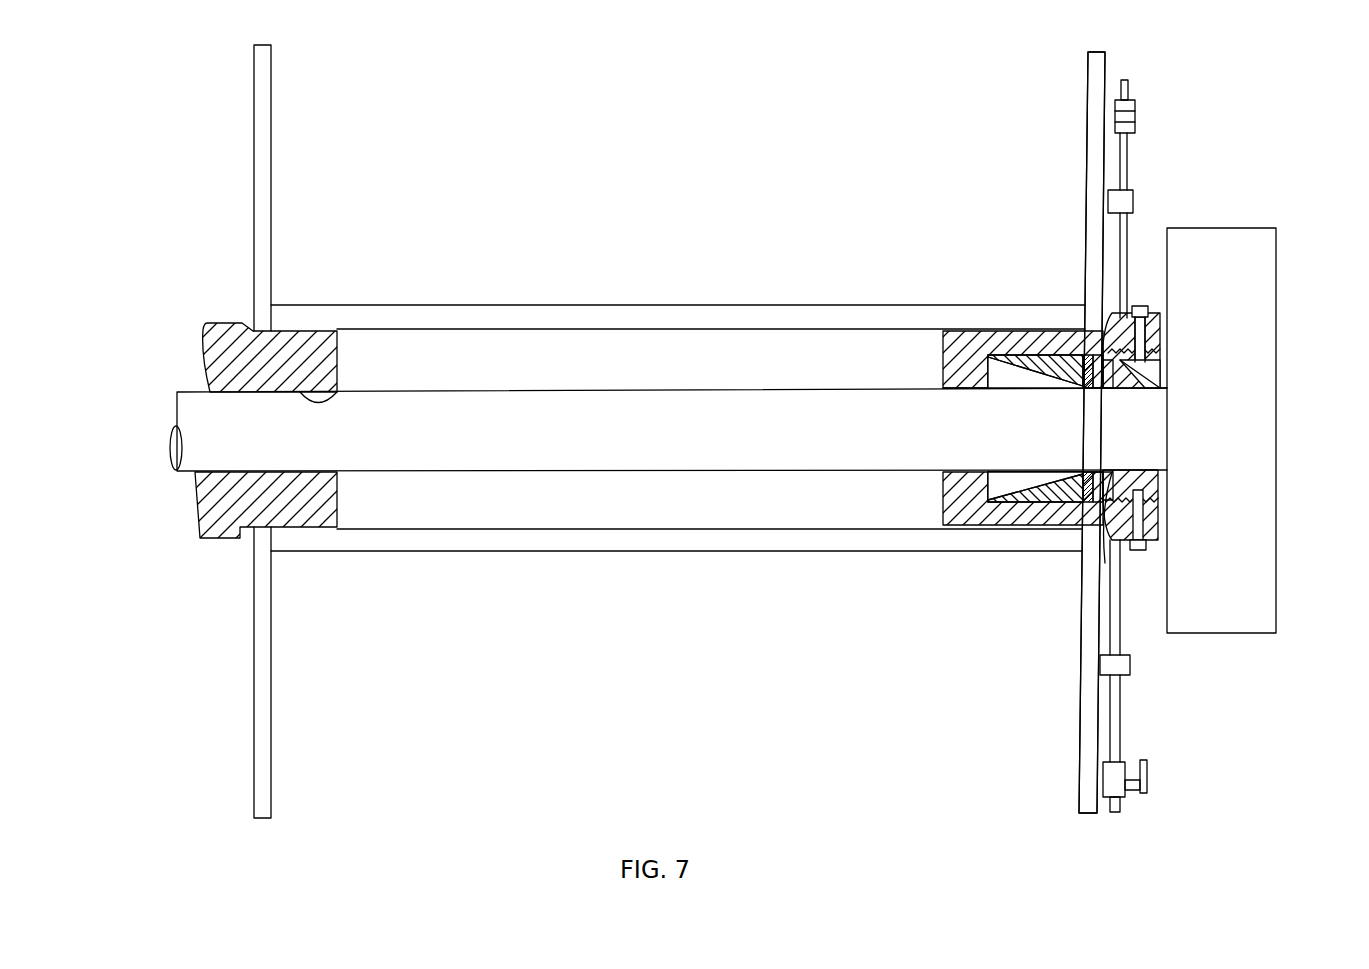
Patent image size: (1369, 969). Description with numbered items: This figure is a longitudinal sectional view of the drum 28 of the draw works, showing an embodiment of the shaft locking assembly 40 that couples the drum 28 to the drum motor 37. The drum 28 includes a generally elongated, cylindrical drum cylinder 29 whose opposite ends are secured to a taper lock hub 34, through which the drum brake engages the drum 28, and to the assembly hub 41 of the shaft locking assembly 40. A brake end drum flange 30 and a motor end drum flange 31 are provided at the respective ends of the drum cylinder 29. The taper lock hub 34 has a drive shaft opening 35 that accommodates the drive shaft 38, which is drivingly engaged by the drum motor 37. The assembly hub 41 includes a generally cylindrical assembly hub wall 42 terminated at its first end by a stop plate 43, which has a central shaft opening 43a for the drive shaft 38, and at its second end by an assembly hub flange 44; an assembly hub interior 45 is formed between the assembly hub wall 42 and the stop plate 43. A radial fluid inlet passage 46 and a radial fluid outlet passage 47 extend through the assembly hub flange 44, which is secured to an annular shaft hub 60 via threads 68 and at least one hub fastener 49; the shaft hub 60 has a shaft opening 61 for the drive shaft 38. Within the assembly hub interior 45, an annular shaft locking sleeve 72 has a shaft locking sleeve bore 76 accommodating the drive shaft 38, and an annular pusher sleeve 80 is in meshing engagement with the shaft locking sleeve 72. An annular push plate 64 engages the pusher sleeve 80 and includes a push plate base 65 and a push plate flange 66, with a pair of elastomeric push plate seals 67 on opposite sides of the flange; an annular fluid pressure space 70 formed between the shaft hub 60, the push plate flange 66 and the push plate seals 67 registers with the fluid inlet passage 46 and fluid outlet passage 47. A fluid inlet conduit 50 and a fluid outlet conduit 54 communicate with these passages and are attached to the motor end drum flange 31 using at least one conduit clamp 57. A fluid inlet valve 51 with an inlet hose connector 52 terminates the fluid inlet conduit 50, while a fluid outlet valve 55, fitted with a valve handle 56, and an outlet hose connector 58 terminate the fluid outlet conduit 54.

The drum 28 is at (1108, 60).
The drum cylinder 29 is at (490, 305).
The brake end drum flange 30 is at (265, 223).
The motor end drum flange 31 is at (1088, 241).
The taper lock hub 34 is at (222, 333).
The drive shaft opening 35 is at (338, 400).
The drum motor 37 is at (1255, 438).
The drive shaft 38 is at (780, 442).
The shaft locking assembly 40 is at (1192, 130).
The assembly hub 41 is at (942, 352).
The assembly hub wall 42 is at (1023, 328).
The stop plate 43 is at (965, 487).
The central shaft opening 43a is at (960, 390).
The assembly hub flange 44 is at (1162, 322).
The assembly hub interior 45 is at (1033, 504).
The radial fluid inlet passage 46 is at (1136, 306).
The radial fluid outlet passage 47 is at (1103, 545).
The hub fastener 49 is at (1165, 300).
The fluid inlet conduit 50 is at (1130, 172).
The fluid inlet valve 51 is at (1137, 115).
The inlet hose connector 52 is at (1130, 85).
The fluid outlet conduit 54 is at (1120, 703).
The fluid outlet valve 55 is at (1115, 773).
The valve handle 56 is at (1149, 776).
The conduit clamp 57 is at (1130, 203).
The outlet hose connector 58 is at (1122, 808).
The shaft hub 60 is at (1152, 378).
The shaft opening 61 is at (1140, 390).
The push plate 64 is at (1078, 510).
The push plate base 65 is at (1086, 388).
The push plate flange 66 is at (1098, 390).
The push plate seals 67 is at (1110, 473).
The threads 68 is at (1160, 492).
The fluid pressure space 70 is at (1110, 390).
The shaft locking sleeve 72 is at (978, 371).
The shaft locking sleeve bore 76 is at (1002, 389).
The pusher sleeve 80 is at (1001, 505).